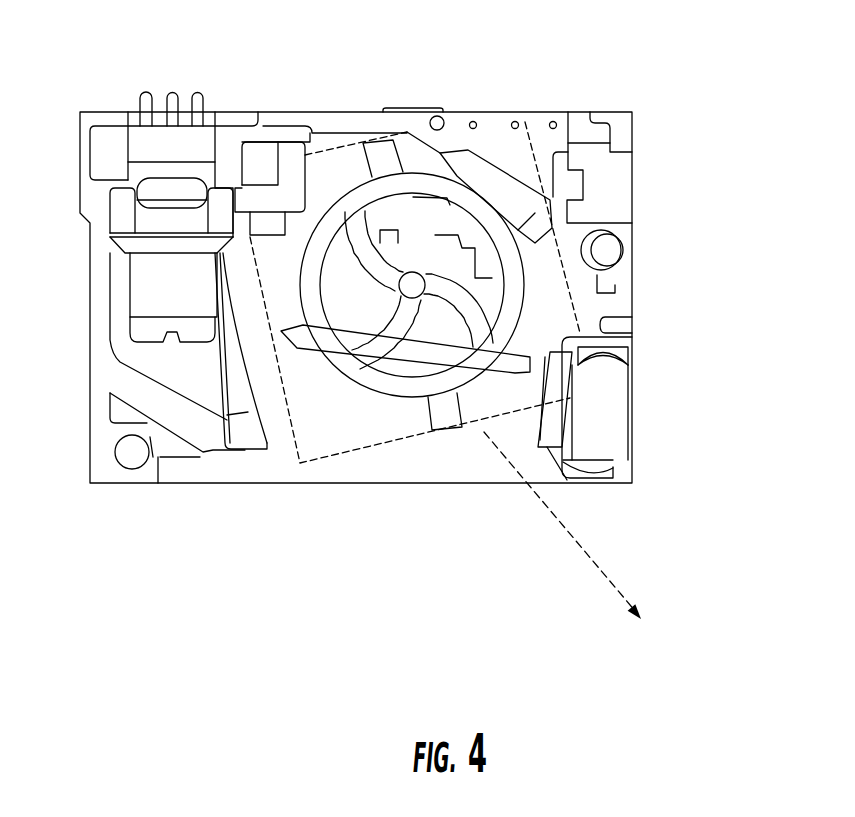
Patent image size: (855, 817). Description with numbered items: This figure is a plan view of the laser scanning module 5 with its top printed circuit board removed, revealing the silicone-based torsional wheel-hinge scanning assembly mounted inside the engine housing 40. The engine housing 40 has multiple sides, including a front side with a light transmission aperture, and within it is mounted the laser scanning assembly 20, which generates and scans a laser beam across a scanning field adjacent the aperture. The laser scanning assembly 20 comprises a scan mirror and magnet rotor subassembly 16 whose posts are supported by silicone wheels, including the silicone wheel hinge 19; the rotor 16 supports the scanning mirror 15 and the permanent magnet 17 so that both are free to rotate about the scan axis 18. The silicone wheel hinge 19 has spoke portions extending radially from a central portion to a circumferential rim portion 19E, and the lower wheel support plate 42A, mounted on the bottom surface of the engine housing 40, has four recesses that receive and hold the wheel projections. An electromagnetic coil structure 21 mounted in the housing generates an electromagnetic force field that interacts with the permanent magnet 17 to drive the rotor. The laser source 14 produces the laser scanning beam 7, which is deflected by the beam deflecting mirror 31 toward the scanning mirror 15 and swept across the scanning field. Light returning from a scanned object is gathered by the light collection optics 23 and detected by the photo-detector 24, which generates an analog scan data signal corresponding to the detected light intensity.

The laser scanning module 5 is at (748, 498).
The laser scanning beam 7 is at (612, 578).
The laser source 14 is at (155, 273).
The scanning mirror 15 is at (517, 363).
The scan mirror and magnet rotor subassembly 16 is at (432, 292).
The permanent magnet 17 is at (396, 232).
The scan axis 18 is at (435, 233).
The silicone wheel hinge 19 is at (372, 378).
The circumferential rim portion 19E is at (380, 400).
The laser scanning assembly 20 is at (320, 378).
The electromagnetic coil structure 21 is at (446, 138).
The light collection optics 23 is at (305, 396).
The photo-detector 24 is at (593, 408).
The beam deflecting mirror 31 is at (180, 378).
The engine housing 40 is at (633, 128).
The lower wheel support plate 42A is at (391, 443).